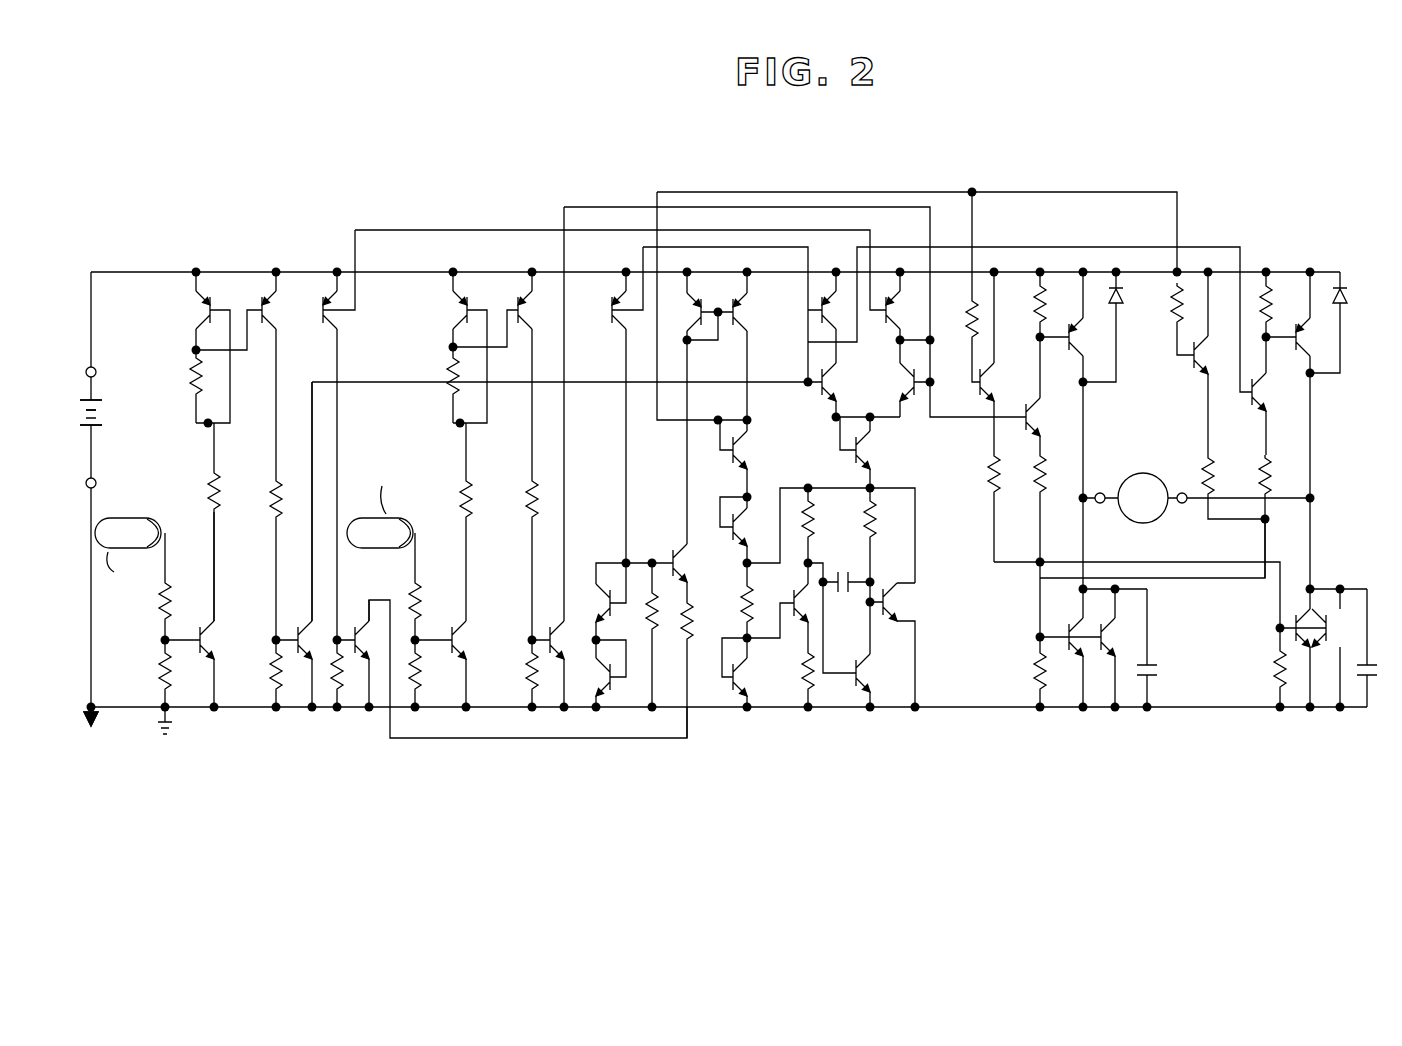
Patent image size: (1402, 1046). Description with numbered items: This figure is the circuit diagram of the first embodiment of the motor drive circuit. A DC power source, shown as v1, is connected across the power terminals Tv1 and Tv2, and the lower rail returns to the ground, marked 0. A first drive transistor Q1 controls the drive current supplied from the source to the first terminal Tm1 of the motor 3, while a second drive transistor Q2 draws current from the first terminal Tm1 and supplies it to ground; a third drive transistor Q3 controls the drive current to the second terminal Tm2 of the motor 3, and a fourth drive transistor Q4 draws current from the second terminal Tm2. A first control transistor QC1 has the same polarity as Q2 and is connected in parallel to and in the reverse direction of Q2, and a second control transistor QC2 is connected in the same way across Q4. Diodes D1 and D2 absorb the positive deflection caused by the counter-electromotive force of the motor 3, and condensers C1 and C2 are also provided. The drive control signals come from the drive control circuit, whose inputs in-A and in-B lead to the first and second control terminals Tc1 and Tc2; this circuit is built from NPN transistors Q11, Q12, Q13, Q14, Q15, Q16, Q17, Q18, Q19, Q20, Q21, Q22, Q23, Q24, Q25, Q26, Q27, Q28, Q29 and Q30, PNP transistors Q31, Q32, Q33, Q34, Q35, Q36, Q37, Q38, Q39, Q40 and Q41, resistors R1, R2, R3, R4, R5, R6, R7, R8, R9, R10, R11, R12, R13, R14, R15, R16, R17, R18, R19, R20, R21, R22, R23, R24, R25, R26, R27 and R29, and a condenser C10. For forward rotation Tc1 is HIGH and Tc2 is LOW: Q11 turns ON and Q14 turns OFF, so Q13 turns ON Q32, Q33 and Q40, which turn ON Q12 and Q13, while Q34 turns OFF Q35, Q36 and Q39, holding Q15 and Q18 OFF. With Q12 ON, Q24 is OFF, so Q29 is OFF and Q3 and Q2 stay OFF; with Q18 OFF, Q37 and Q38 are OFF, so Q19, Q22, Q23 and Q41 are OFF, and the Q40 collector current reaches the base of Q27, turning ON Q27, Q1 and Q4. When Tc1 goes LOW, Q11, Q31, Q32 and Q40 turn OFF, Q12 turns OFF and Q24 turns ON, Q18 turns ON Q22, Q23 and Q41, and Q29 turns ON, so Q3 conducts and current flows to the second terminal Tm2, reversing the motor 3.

The motor 3 is at (1143, 473).
The power terminal Tv1 is at (96, 369).
The power terminal Tv2 is at (96, 483).
The power supply voltage source v1 is at (101, 399).
The ground 0 is at (98, 733).
The control input A in-A is at (128, 533).
The control input B in-B is at (381, 549).
The first control terminal Tc1 is at (126, 569).
The second control terminal Tc2 is at (377, 488).
The first terminal of the motor Tm1 is at (1103, 493).
The second terminal of the motor Tm2 is at (1183, 493).
The first drive transistor Q1 is at (1090, 430).
The second drive transistor Q2 is at (1070, 648).
The third drive transistor Q3 is at (1319, 430).
The fourth drive transistor Q4 is at (1303, 646).
The NPN transistor Q11 is at (213, 609).
The NPN transistor Q12 is at (297, 544).
The NPN transistor Q13 is at (361, 644).
The NPN transistor Q14 is at (462, 613).
The NPN transistor Q15 is at (552, 457).
The NPN transistor Q16 is at (621, 601).
The NPN transistor Q17 is at (597, 673).
The NPN transistor Q18 is at (667, 470).
The NPN transistor Q19 is at (755, 458).
The NPN transistor Q20 is at (752, 530).
The NPN transistor Q21 is at (724, 672).
The NPN transistor Q22 is at (777, 606).
The NPN transistor Q23 is at (881, 654).
The NPN transistor Q24 is at (839, 373).
The NPN transistor Q25 is at (902, 378).
The NPN transistor Q26 is at (877, 452).
The NPN transistor Q27 is at (1052, 395).
The NPN transistor Q28 is at (983, 322).
The NPN transistor Q29 is at (1279, 396).
The NPN transistor Q30 is at (1218, 363).
The PNP transistor Q31 is at (195, 347).
The PNP transistor Q32 is at (256, 375).
The PNP transistor Q33 is at (352, 456).
The PNP transistor Q34 is at (451, 347).
The PNP transistor Q35 is at (492, 375).
The PNP transistor Q36 is at (598, 417).
The PNP transistor Q37 is at (696, 306).
The PNP transistor Q38 is at (760, 346).
The PNP transistor Q39 is at (805, 309).
The PNP transistor Q40 is at (910, 306).
The PNP transistor Q41 is at (904, 645).
The first control transistor QC1 is at (1128, 648).
The second control transistor QC2 is at (1341, 648).
The resistor R1 is at (179, 586).
The resistor R2 is at (180, 673).
The resistor R3 is at (183, 386).
The resistor R4 is at (229, 522).
The resistor R5 is at (262, 559).
The resistor R6 is at (264, 673).
The resistor R7 is at (351, 673).
The resistor R8 is at (430, 610).
The resistor R9 is at (430, 673).
The resistor R10 is at (433, 385).
The resistor R11 is at (450, 471).
The resistor R12 is at (515, 559).
The resistor R13 is at (513, 673).
The resistor R14 is at (635, 635).
The resistor R15 is at (673, 669).
The resistor R16 is at (728, 600).
The resistor R17 is at (829, 525).
The resistor R18 is at (789, 678).
The resistor R19 is at (889, 545).
The resistor R20 is at (1034, 304).
The resistor R21 is at (1058, 545).
The resistor R22 is at (976, 507).
The resistor R23 is at (1286, 304).
The resistor R24 is at (1233, 487).
The resistor R25 is at (1282, 516).
The resistor R26 is at (1020, 672).
The resistor R27 is at (1259, 667).
The resistor R29 is at (1165, 319).
The condenser C1 is at (1158, 648).
The condenser C2 is at (1379, 648).
The condenser C10 is at (846, 595).
The diode D1 is at (1117, 327).
The diode D2 is at (1344, 322).